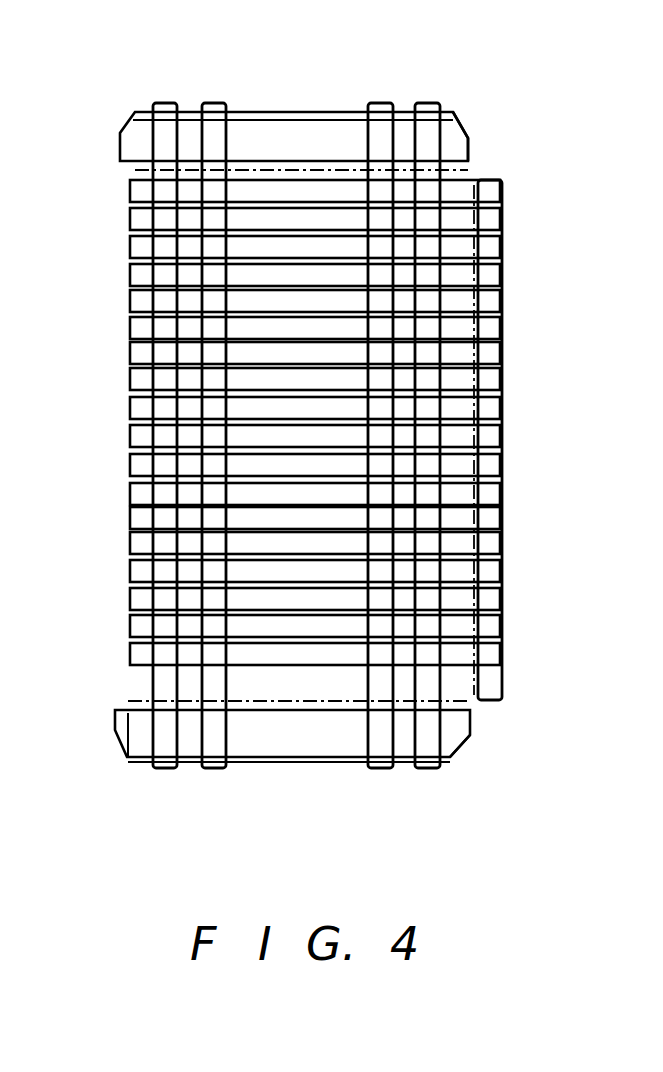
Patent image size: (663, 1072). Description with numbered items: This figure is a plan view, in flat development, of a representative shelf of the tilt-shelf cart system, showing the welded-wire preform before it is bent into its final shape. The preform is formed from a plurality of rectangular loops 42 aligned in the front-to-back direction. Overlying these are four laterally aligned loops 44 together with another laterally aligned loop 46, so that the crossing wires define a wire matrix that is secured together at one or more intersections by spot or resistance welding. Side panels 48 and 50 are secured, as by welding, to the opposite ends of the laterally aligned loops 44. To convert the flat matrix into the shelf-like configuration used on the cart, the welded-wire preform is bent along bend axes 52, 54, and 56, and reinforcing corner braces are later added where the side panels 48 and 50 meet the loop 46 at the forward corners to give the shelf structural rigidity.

The rectangular loops 42 is at (140, 193).
The laterally aligned loops 44 is at (140, 657).
The laterally aligned loop 46 is at (496, 469).
The side panel 48 is at (295, 735).
The side panel 50 is at (291, 138).
The bend axis 52 is at (455, 720).
The bend axis 54 is at (452, 163).
The bend axis 56 is at (471, 173).